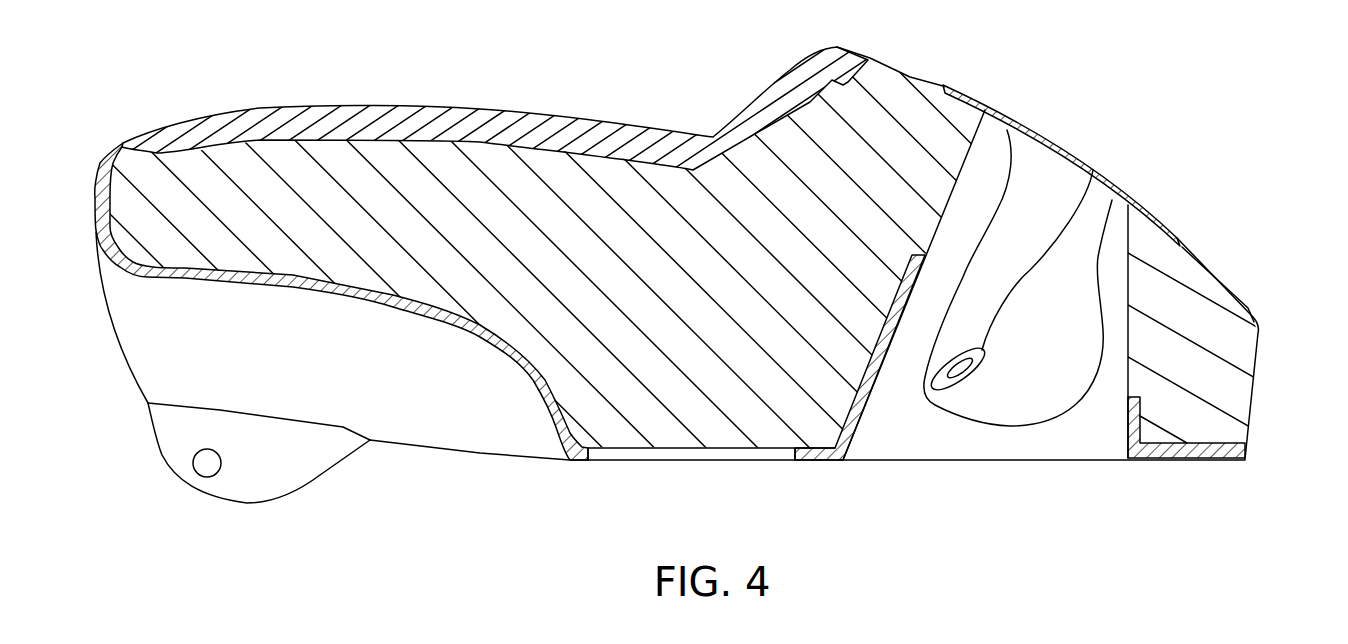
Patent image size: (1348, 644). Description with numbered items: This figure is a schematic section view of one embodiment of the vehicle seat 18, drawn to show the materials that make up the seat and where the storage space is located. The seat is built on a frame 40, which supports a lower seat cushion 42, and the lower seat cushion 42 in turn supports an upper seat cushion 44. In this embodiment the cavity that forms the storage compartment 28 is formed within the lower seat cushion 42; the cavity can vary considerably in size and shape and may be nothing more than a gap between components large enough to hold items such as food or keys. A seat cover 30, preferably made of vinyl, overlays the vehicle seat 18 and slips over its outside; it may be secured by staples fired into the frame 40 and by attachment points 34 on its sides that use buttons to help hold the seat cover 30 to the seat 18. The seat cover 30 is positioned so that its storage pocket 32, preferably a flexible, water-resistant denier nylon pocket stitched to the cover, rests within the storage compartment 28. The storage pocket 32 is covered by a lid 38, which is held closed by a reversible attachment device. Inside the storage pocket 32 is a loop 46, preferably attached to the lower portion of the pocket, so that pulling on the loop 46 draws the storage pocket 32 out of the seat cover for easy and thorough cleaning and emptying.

The vehicle seat 18 is at (1268, 298).
The storage compartment 28 is at (908, 443).
The seat cover 30 is at (132, 338).
The storage pocket 32 is at (1045, 393).
The attachment points 34 is at (172, 432).
The lid 38 is at (998, 104).
The frame 40 is at (537, 400).
The lower seat cushion 42 is at (800, 412).
The upper seat cushion 44 is at (637, 128).
The loop 46 is at (1093, 172).